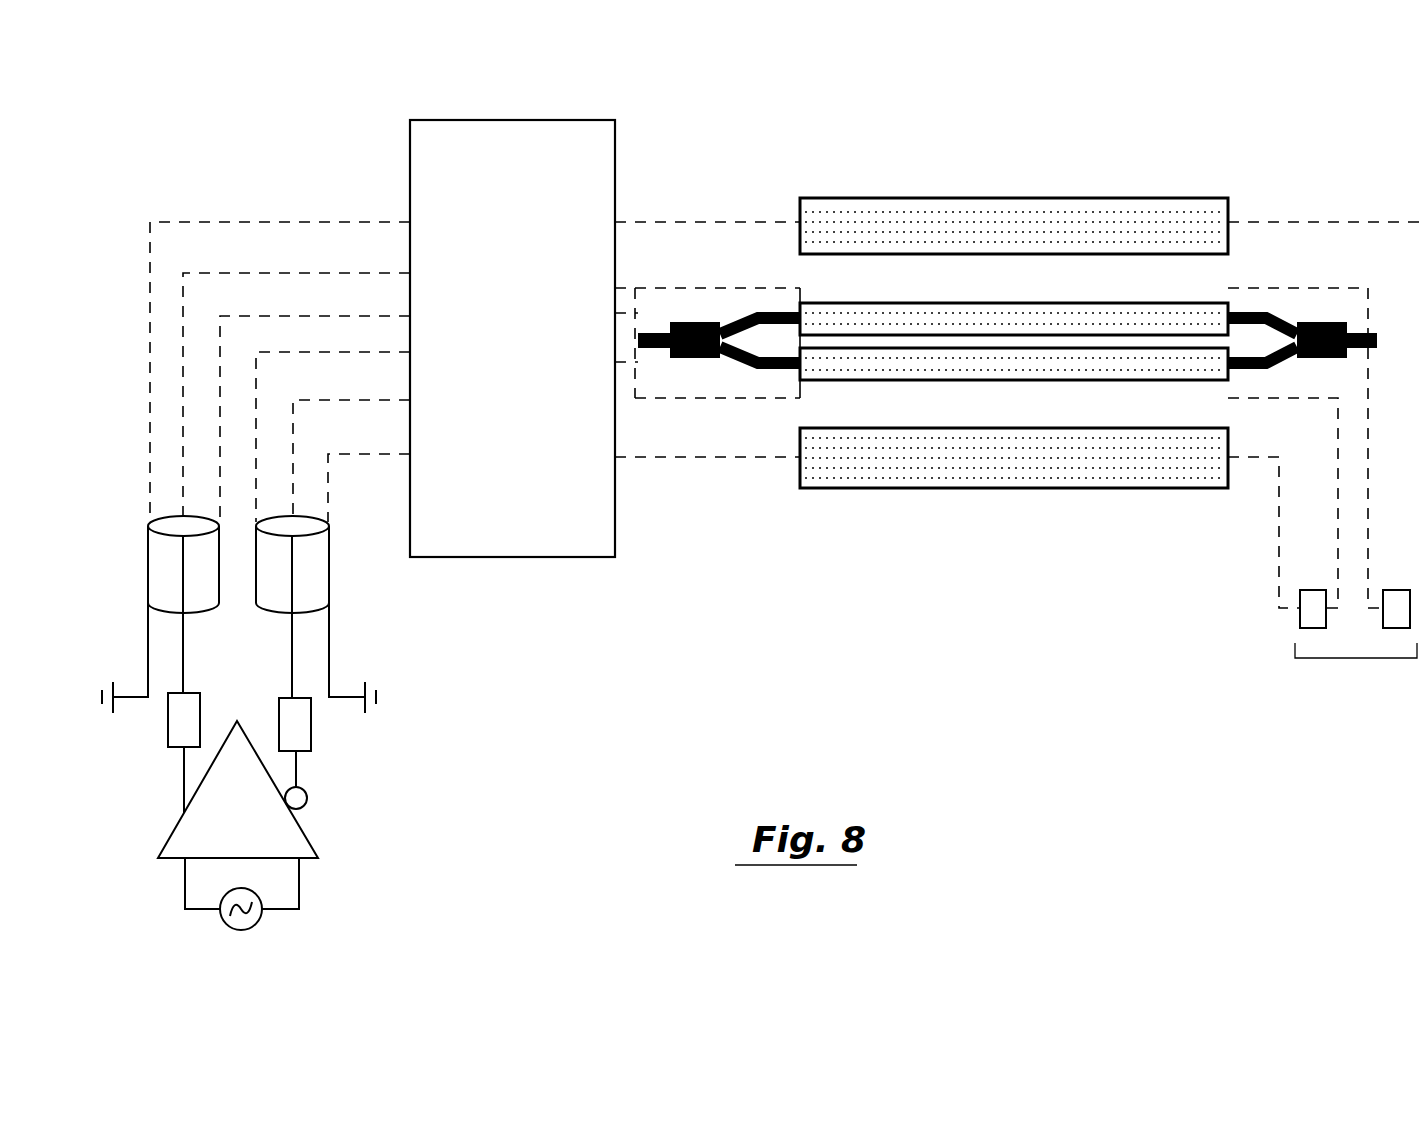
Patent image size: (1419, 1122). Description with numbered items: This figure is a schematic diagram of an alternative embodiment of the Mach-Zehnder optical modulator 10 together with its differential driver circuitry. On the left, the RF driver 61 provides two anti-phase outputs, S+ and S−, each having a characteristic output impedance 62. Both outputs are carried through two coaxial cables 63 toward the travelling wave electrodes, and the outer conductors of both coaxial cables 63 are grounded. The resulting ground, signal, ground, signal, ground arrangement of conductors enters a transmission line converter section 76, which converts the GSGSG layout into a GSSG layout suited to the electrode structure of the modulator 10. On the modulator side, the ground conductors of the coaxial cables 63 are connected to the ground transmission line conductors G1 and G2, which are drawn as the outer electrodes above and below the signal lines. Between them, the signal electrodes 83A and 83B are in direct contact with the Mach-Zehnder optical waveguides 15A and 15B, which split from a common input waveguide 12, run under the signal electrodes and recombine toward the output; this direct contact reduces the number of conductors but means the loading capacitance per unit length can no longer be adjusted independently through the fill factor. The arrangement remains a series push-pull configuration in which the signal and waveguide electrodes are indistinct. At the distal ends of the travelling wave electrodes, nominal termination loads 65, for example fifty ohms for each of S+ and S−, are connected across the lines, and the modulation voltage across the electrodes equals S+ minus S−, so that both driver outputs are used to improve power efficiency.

The optical modulator 10 is at (975, 158).
The ground transmission line conductor G1 is at (833, 203).
The ground transmission line conductor G2 is at (807, 470).
The signal electrode 83A is at (887, 305).
The signal electrode 83B is at (862, 380).
The Mach-Zehnder optical waveguide 15A is at (777, 315).
The Mach-Zehnder optical waveguide 15B is at (785, 365).
The optical waveguide 12 is at (700, 360).
The transmission line converter section 76 is at (495, 479).
The termination loads 65 is at (1358, 658).
The coaxial cables 63 is at (200, 558).
The output impedance 62 is at (200, 712).
The RF driver 61 is at (257, 835).